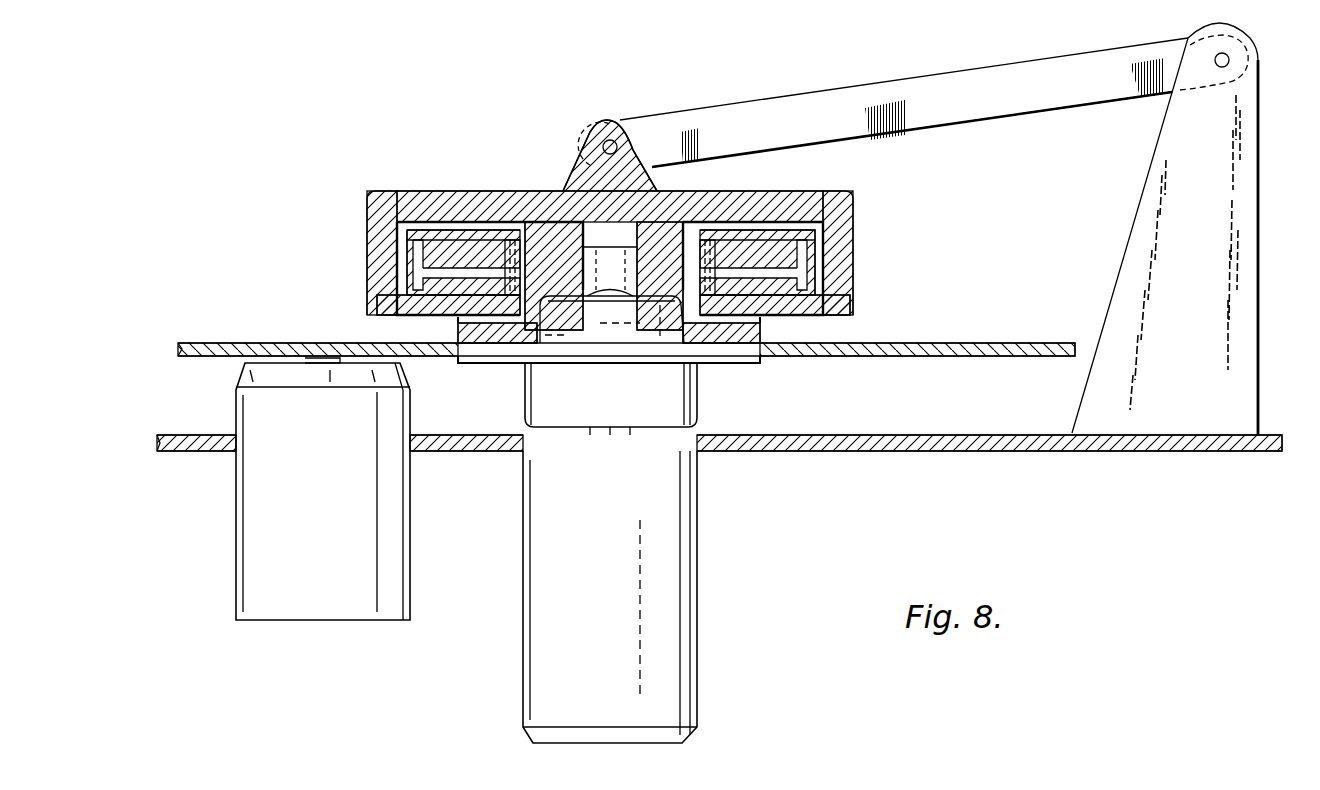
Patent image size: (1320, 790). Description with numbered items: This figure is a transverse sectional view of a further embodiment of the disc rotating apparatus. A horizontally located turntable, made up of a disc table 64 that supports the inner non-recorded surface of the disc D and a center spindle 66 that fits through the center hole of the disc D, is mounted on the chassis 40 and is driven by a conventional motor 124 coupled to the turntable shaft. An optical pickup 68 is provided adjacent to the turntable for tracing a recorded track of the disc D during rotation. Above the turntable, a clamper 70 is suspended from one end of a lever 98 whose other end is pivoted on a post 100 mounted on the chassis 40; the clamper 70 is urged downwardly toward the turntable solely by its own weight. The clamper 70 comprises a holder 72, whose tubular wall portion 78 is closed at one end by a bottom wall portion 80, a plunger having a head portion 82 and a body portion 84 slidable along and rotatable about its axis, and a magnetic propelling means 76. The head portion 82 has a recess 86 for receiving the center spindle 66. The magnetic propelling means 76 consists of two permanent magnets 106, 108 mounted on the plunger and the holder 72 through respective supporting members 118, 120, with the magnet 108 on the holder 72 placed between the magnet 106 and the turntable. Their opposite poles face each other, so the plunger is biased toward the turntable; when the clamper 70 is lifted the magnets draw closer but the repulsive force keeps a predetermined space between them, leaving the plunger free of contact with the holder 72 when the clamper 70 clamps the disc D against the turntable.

The chassis 40 is at (918, 440).
The disc table 64 is at (628, 330).
The center spindle 66 is at (572, 338).
The optical pickup 68 is at (313, 585).
The clamper 70 is at (563, 150).
The holder 72 is at (833, 212).
The magnetic propelling means 76 is at (455, 270).
The tubular wall portion 78 is at (840, 255).
The bottom wall portion 80 is at (462, 200).
The head portion 82 is at (738, 338).
The body portion 84 is at (660, 240).
The recess 86 is at (672, 300).
The lever 98 is at (826, 98).
The post 100 is at (1248, 184).
The permanent magnet 106 is at (440, 240).
The permanent magnet 108 is at (450, 290).
The supporting member 118 is at (515, 240).
The supporting member 120 is at (410, 305).
The motor 124 is at (655, 540).
The disc D is at (985, 342).